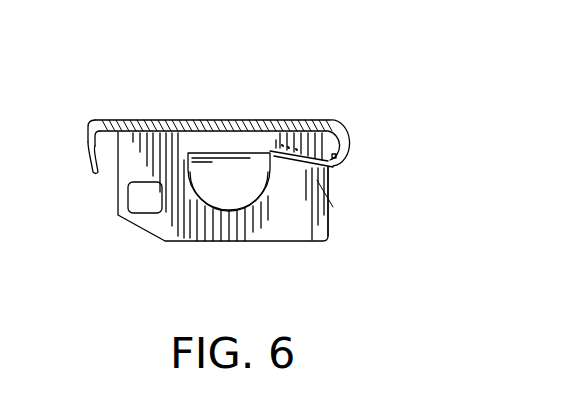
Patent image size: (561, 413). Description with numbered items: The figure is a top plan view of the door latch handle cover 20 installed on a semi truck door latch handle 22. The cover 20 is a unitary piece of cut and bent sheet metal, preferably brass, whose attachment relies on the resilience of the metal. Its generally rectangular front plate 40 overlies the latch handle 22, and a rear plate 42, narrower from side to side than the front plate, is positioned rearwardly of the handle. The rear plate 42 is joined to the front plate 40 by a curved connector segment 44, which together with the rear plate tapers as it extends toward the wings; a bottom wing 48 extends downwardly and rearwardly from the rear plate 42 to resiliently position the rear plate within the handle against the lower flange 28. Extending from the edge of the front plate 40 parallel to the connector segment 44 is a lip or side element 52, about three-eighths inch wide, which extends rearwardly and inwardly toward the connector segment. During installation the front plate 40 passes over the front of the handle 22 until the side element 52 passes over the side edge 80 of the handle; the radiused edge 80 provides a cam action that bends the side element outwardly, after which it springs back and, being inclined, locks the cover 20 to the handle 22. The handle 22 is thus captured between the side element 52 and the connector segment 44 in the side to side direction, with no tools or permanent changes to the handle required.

The door latch handle cover 20 is at (312, 86).
The door latch handle 22 is at (313, 242).
The lower flange 28 is at (329, 205).
The front plate 40 is at (217, 120).
The rear plate 42 is at (283, 165).
The curved connector segment 44 is at (350, 143).
The bottom wing 48 is at (194, 213).
The side element 52 is at (87, 155).
The side edge 80 is at (85, 127).